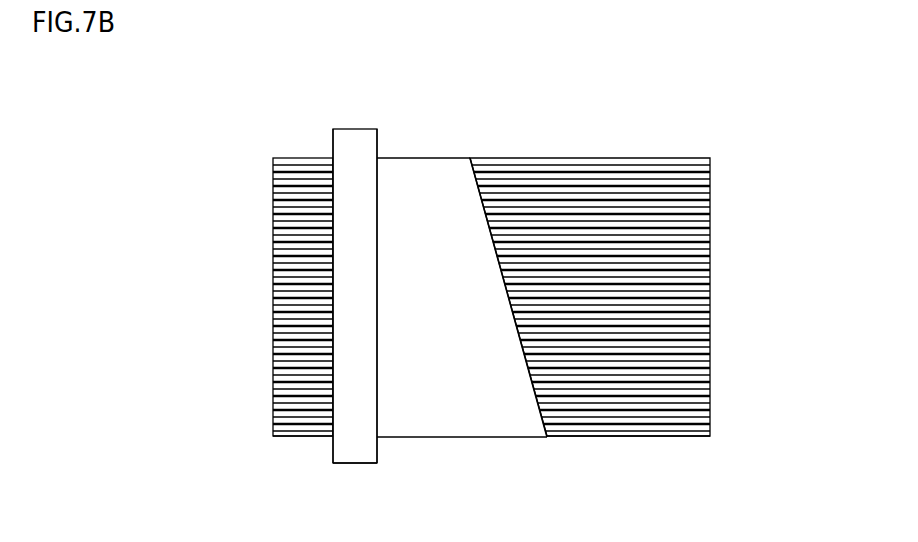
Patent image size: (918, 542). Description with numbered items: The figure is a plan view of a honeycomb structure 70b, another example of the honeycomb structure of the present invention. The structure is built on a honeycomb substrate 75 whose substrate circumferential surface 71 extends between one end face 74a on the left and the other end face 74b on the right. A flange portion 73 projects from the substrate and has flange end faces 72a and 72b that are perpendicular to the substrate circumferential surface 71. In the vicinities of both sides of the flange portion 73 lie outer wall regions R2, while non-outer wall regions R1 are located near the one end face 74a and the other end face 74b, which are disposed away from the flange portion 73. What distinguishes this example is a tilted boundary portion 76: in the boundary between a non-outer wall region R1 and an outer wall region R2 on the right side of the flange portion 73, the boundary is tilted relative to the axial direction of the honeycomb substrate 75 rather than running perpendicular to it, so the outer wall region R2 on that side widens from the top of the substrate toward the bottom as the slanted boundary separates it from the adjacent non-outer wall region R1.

The honeycomb structure 70b is at (462, 295).
The substrate circumferential surface 71 is at (450, 157).
The flange end face 72a is at (333, 142).
The flange end face 72b is at (378, 137).
The flange portion 73 is at (353, 135).
The one end face 74a is at (273, 305).
The other end face 74b is at (710, 298).
The honeycomb substrate 75 is at (487, 418).
The tilted boundary portion 76 is at (507, 293).
The non-outer wall region R1 is at (250, 365).
The outer wall region R2 is at (320, 452).